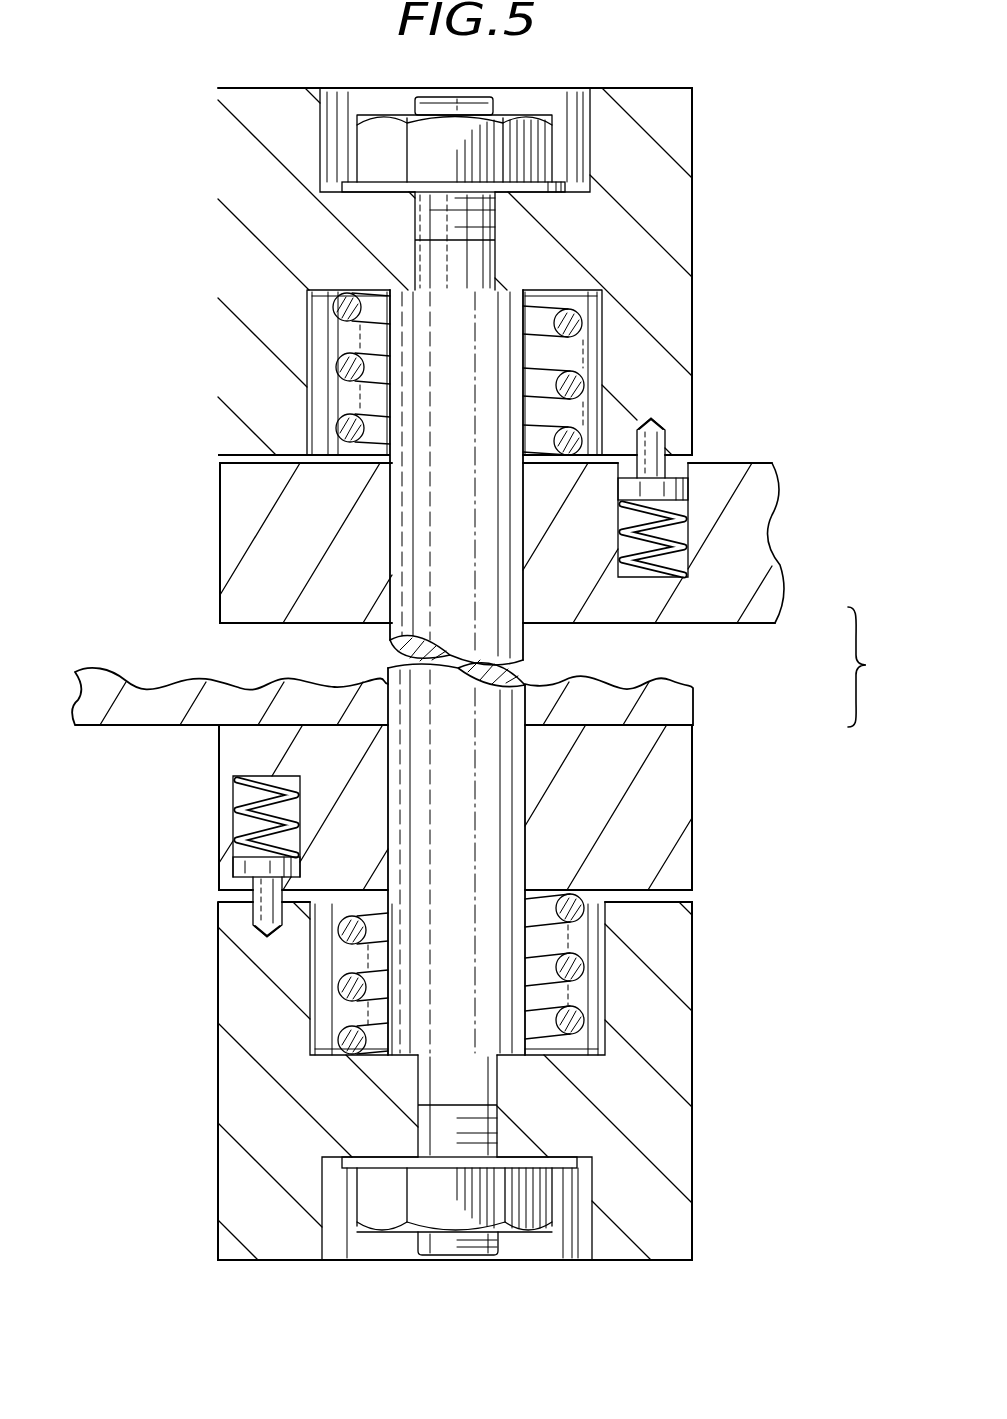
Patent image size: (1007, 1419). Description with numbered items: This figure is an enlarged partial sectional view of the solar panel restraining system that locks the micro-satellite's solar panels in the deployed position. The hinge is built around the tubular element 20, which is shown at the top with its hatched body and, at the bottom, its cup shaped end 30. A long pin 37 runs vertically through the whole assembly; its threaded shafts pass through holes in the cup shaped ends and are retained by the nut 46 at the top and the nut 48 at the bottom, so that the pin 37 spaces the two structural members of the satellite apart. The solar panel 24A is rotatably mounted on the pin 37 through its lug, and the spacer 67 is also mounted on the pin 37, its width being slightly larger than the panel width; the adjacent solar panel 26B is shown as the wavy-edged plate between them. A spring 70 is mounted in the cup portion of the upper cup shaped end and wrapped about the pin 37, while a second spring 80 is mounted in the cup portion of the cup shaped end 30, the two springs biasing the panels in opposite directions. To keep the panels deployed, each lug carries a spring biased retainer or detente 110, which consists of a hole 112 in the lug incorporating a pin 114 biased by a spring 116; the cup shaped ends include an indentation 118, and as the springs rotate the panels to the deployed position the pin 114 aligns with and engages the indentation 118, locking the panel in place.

The tubular element 20 is at (212, 242).
The nut 46 is at (530, 115).
The spring 70 is at (583, 324).
The indentation 118 is at (650, 422).
The pin 114 is at (668, 440).
The spring biased retainer or detente 110 is at (700, 488).
The spring 116 is at (678, 534).
The hole 112 is at (684, 560).
The solar panel 24A is at (218, 543).
The solar panel 26B is at (105, 668).
The pin 37 is at (526, 672).
The spacer 67 is at (692, 800).
The spring 80 is at (582, 1018).
The cup shaped end 30 is at (704, 1176).
The nut 48 is at (383, 1233).